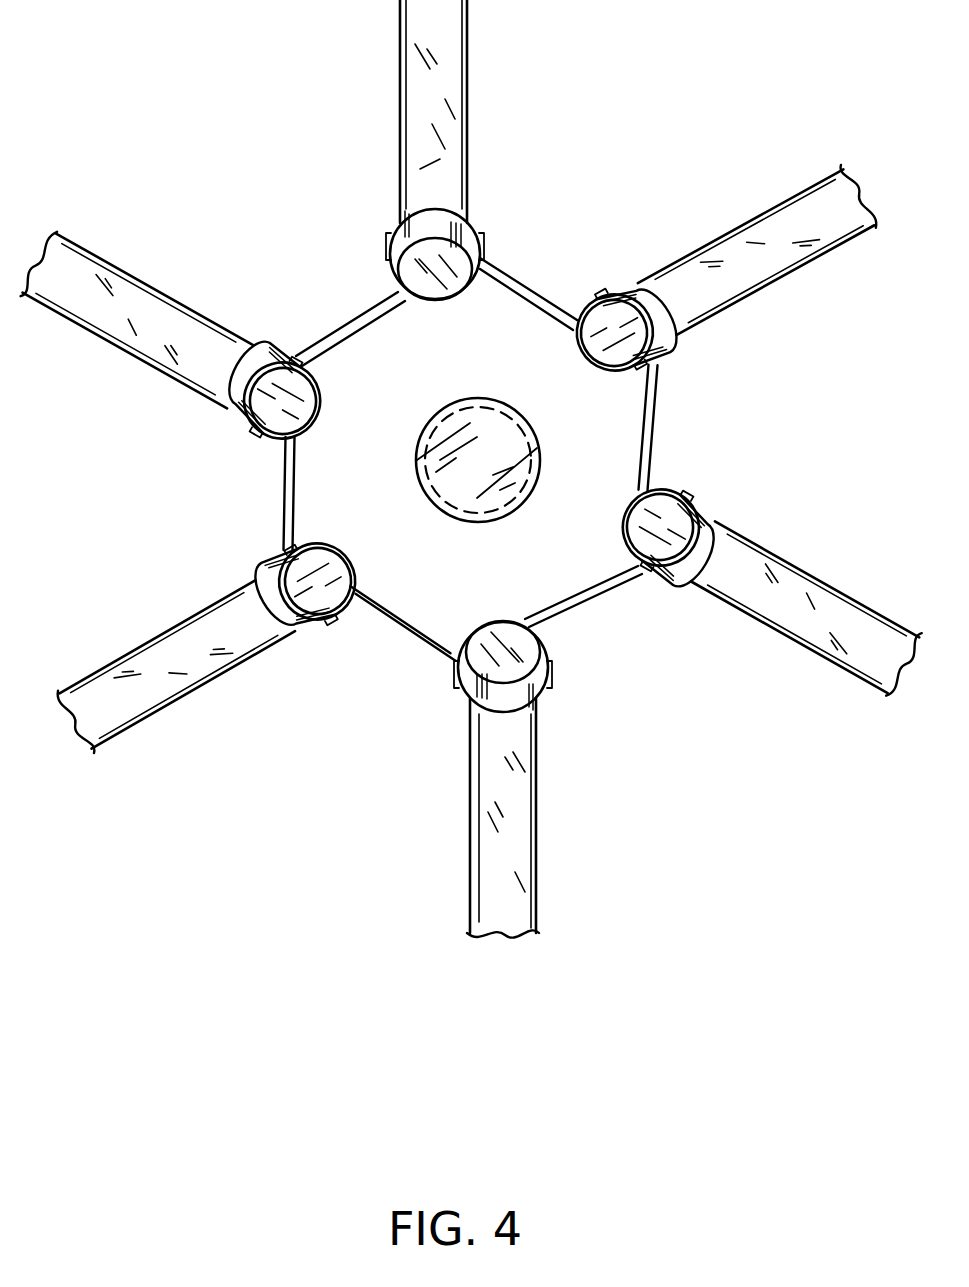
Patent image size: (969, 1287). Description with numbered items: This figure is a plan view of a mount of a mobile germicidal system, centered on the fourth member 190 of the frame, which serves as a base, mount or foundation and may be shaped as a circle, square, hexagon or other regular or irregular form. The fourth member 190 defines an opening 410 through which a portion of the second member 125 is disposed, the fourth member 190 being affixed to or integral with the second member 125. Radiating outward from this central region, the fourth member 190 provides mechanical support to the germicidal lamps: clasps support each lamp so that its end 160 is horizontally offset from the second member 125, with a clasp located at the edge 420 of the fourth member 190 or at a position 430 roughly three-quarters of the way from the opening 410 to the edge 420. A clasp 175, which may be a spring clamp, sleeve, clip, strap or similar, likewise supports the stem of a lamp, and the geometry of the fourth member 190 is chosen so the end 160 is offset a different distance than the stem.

The opening 410 is at (493, 398).
The edge 420 is at (580, 320).
The position 430 is at (377, 409).
The second member 125 is at (463, 483).
The clasp 175 is at (453, 670).
The fourth member 190 is at (530, 577).
The end 160 is at (700, 547).